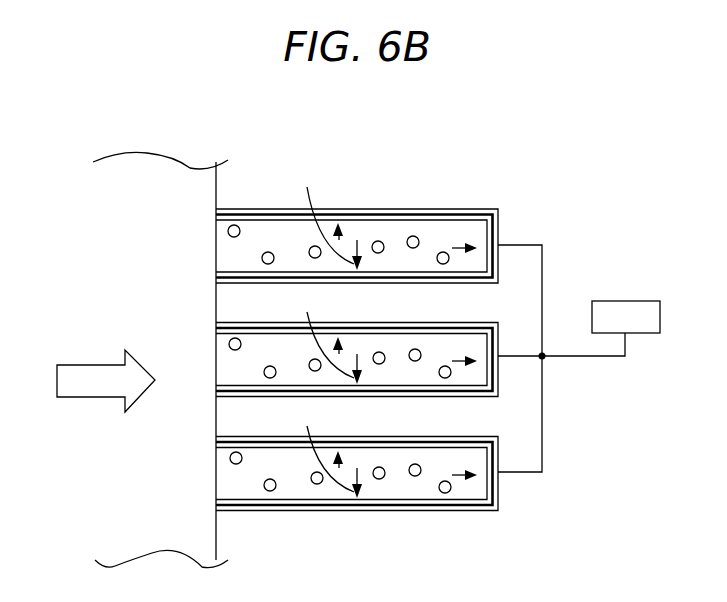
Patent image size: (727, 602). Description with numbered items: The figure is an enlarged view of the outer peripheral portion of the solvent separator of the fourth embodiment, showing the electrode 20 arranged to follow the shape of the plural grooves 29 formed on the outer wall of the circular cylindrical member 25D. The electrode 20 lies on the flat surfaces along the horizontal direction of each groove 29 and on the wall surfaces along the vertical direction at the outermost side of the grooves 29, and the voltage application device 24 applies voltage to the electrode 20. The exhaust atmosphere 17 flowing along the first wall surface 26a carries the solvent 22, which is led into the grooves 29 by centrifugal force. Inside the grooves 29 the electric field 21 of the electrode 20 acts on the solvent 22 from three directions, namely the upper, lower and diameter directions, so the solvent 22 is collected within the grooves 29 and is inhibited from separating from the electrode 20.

The exhaust atmosphere 17 is at (83, 365).
The electrode 20 is at (262, 512).
The electric field 21 is at (518, 197).
The solvent 22 is at (442, 252).
The voltage application device 24 is at (623, 301).
The circular cylindrical member 25D is at (222, 182).
The first wall surface 26a is at (211, 300).
The grooves 29 is at (453, 181).